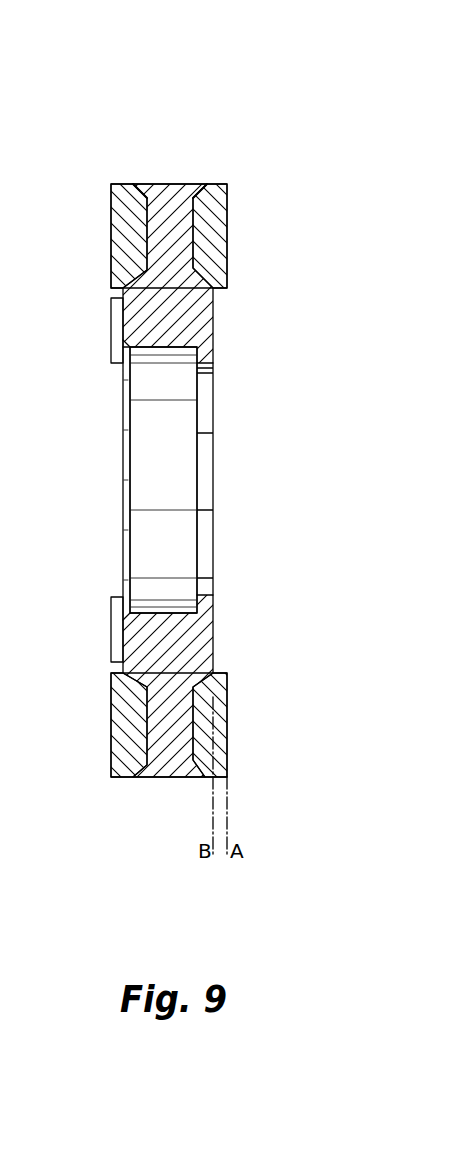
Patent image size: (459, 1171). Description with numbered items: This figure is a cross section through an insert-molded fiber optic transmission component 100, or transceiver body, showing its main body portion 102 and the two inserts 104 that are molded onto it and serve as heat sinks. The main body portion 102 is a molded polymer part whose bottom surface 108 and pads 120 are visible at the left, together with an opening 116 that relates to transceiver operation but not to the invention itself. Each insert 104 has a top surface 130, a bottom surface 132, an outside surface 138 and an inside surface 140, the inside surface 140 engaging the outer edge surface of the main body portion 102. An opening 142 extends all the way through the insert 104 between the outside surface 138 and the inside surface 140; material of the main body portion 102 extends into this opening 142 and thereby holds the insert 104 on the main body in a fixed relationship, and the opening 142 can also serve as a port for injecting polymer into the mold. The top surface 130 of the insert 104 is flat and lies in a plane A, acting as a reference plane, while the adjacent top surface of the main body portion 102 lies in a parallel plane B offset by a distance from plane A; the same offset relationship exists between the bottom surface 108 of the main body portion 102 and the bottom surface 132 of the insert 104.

The insert-molded fiber optic transmission component 100 is at (182, 95).
The main body portion 102 is at (214, 357).
The insert 104 is at (227, 202).
The bottom surface 108 is at (122, 478).
The opening 116 is at (178, 480).
The pads 120 is at (112, 632).
The top surface 130 is at (227, 258).
The bottom surface 132 is at (110, 235).
The outside surface 138 is at (122, 183).
The inside surface 140 is at (215, 291).
The opening 142 is at (205, 185).